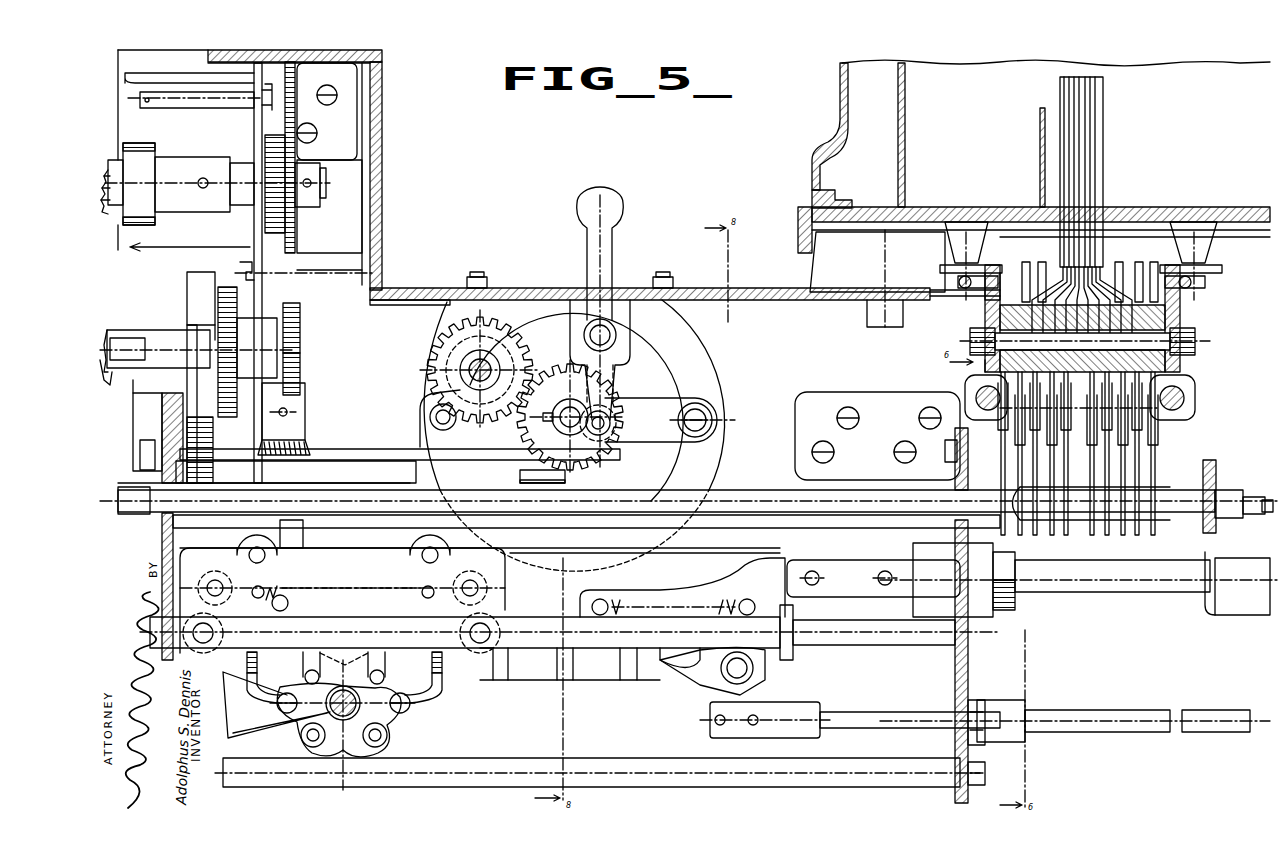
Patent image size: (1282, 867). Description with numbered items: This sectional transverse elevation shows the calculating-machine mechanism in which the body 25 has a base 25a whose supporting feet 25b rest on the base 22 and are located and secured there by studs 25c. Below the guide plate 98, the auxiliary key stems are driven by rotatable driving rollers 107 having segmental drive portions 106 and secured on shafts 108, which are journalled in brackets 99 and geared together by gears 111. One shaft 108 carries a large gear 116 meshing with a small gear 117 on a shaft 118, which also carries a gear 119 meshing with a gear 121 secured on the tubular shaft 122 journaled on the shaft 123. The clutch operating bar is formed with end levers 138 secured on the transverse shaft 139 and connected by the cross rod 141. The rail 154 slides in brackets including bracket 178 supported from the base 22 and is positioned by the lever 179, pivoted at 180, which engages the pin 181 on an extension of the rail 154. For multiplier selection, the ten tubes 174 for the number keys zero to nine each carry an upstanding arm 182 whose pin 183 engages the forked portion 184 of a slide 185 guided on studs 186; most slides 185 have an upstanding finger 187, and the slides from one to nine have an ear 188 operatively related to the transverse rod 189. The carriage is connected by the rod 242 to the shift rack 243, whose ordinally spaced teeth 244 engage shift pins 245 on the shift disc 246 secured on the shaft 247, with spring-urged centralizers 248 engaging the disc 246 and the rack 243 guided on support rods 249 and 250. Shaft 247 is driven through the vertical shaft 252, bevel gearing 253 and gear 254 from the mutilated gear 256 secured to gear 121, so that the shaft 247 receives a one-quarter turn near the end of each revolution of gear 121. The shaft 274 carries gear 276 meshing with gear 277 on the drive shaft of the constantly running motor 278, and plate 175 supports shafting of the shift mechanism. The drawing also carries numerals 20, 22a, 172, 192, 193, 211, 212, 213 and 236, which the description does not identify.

The housing wall 20 is at (1176, 62).
The base 22 is at (400, 288).
The housing cover 22a is at (362, 52).
The body 25 is at (840, 115).
The base 25a is at (810, 205).
The supporting feet 25b is at (813, 270).
The studs 25c is at (867, 318).
The guide plate 98 is at (170, 72).
The brackets 99 is at (255, 125).
The segmental drive portions 106 is at (135, 143).
The driving rollers 107 is at (168, 160).
The shafts 108 is at (318, 186).
The gears 111 is at (266, 145).
The large gear 116 is at (292, 60).
The small gear 117 is at (302, 365).
The shaft 118 is at (302, 340).
The gear 119 is at (217, 300).
The gear 121 is at (240, 266).
The tubular shaft 122 is at (122, 330).
The shaft 123 is at (110, 384).
The end levers 138 is at (196, 382).
The transverse shaft 139 is at (122, 330).
The cross rod 141 is at (135, 338).
The rail 154 is at (142, 452).
The main shaft 172 is at (126, 490).
The tubes 174 is at (755, 520).
The plate 175 is at (968, 664).
The bracket 178 is at (162, 530).
The lever 179 is at (590, 265).
The pivot 180 is at (617, 333).
The pin 181 is at (618, 418).
The upstanding arm 182 is at (1155, 462).
The pin 183 is at (1010, 412).
The forked portion 184 is at (1150, 368).
The slides 185 is at (1180, 318).
The studs 186 is at (1196, 335).
The upstanding finger 187 is at (1103, 145).
The upstanding ear 188 is at (1140, 262).
The transverse rod 189 is at (1034, 262).
The bearing 192 is at (966, 290).
The bracket 193 is at (990, 265).
The collar 211 is at (1203, 488).
The bracket 212 is at (1212, 612).
The shaft end 213 is at (1258, 514).
The block 236 is at (1222, 598).
The rod 242 is at (1058, 583).
The shift rack 243 is at (540, 612).
The teeth 244 is at (520, 672).
The shift pins 245 is at (305, 672).
The shift disc 246 is at (390, 728).
The shaft 247 is at (292, 728).
The centralizers 248 is at (410, 588).
The support rod 249 is at (838, 645).
The support rod 250 is at (1110, 712).
The vertical shaft 252 is at (308, 530).
The bevel gearing 253 is at (306, 430).
The gear 254 is at (198, 485).
The mutilated gear 256 is at (192, 274).
The shaft 274 is at (470, 372).
The gear 276 is at (444, 345).
The gear 277 is at (556, 365).
The motor 278 is at (705, 370).